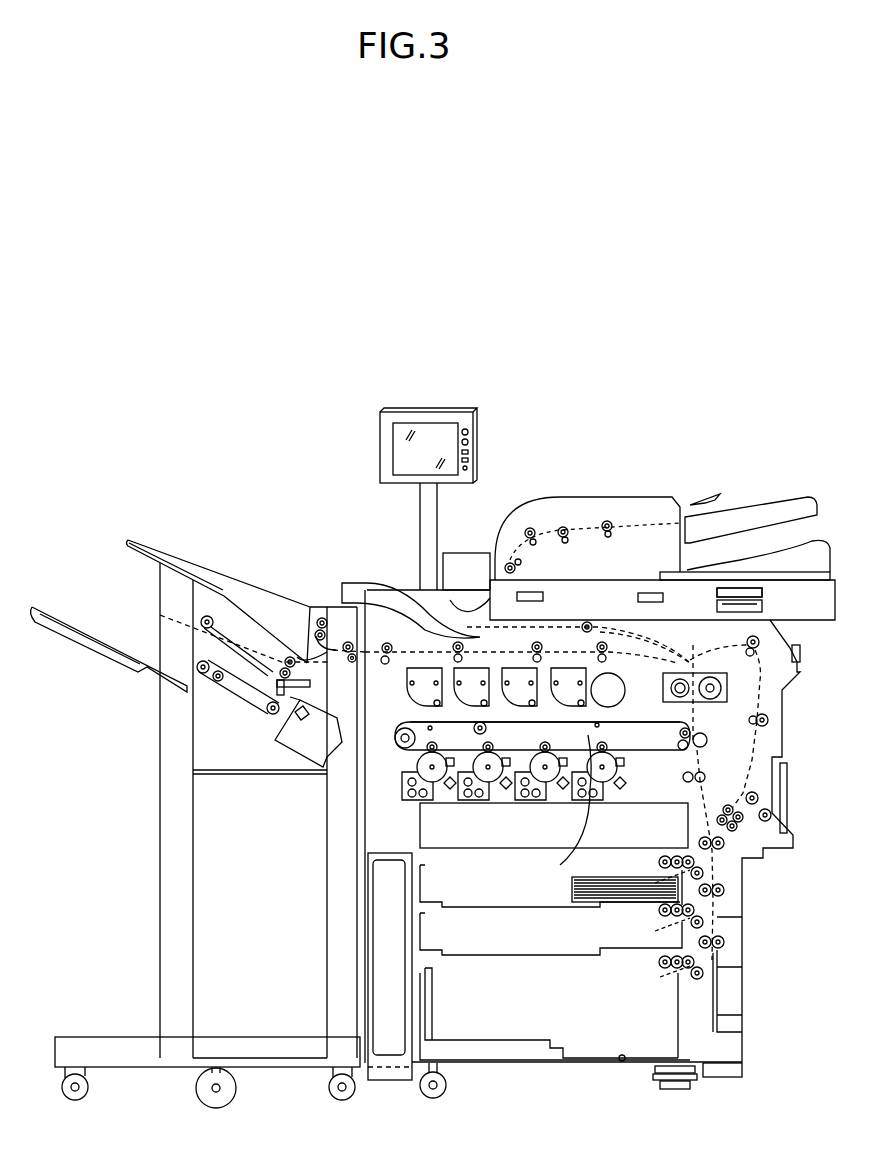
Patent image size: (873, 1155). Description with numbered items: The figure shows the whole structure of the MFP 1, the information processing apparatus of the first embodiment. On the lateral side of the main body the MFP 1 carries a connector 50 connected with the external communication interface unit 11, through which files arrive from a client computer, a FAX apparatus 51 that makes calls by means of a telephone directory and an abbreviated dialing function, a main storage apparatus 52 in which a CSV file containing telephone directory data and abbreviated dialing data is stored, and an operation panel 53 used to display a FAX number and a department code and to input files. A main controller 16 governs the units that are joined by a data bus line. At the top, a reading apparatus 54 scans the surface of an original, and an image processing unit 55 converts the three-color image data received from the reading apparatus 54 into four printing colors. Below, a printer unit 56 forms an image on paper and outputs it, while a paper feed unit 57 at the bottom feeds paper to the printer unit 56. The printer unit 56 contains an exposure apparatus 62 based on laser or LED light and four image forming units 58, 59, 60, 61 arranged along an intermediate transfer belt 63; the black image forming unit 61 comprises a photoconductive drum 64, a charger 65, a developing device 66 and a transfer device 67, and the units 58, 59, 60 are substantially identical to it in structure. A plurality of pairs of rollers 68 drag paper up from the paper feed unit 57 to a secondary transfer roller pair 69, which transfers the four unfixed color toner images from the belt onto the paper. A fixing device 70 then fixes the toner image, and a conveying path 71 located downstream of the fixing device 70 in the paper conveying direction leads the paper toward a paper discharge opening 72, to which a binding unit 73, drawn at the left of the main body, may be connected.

The MFP 1 is at (604, 436).
The external communication interface unit 11 is at (717, 605).
The main controller 16 is at (765, 596).
The connector 50 is at (803, 650).
The FAX apparatus 51 is at (455, 556).
The main storage apparatus 52 is at (545, 600).
The operation panel 53 is at (470, 425).
The reading apparatus 54 is at (628, 503).
The image processing unit 55 is at (638, 598).
The printer unit 56 is at (724, 741).
The paper feed unit 57 is at (748, 870).
The image forming unit 58 is at (438, 789).
The image forming unit 59 is at (494, 789).
The image forming unit 60 is at (551, 789).
The black image forming unit 61 is at (608, 789).
The exposure apparatus 62 is at (663, 803).
The intermediate transfer belt 63 is at (637, 723).
The photoconductive drum 64 is at (545, 734).
The charger 65 is at (618, 780).
The developing device 66 is at (564, 807).
The transfer device 67 is at (604, 742).
The pairs of rollers 68 is at (746, 836).
The secondary transfer roller pair 69 is at (706, 744).
The fixing device 70 is at (727, 685).
The conveying path 71 is at (618, 647).
The paper discharge opening 72 is at (374, 641).
The binding unit 73 is at (261, 580).